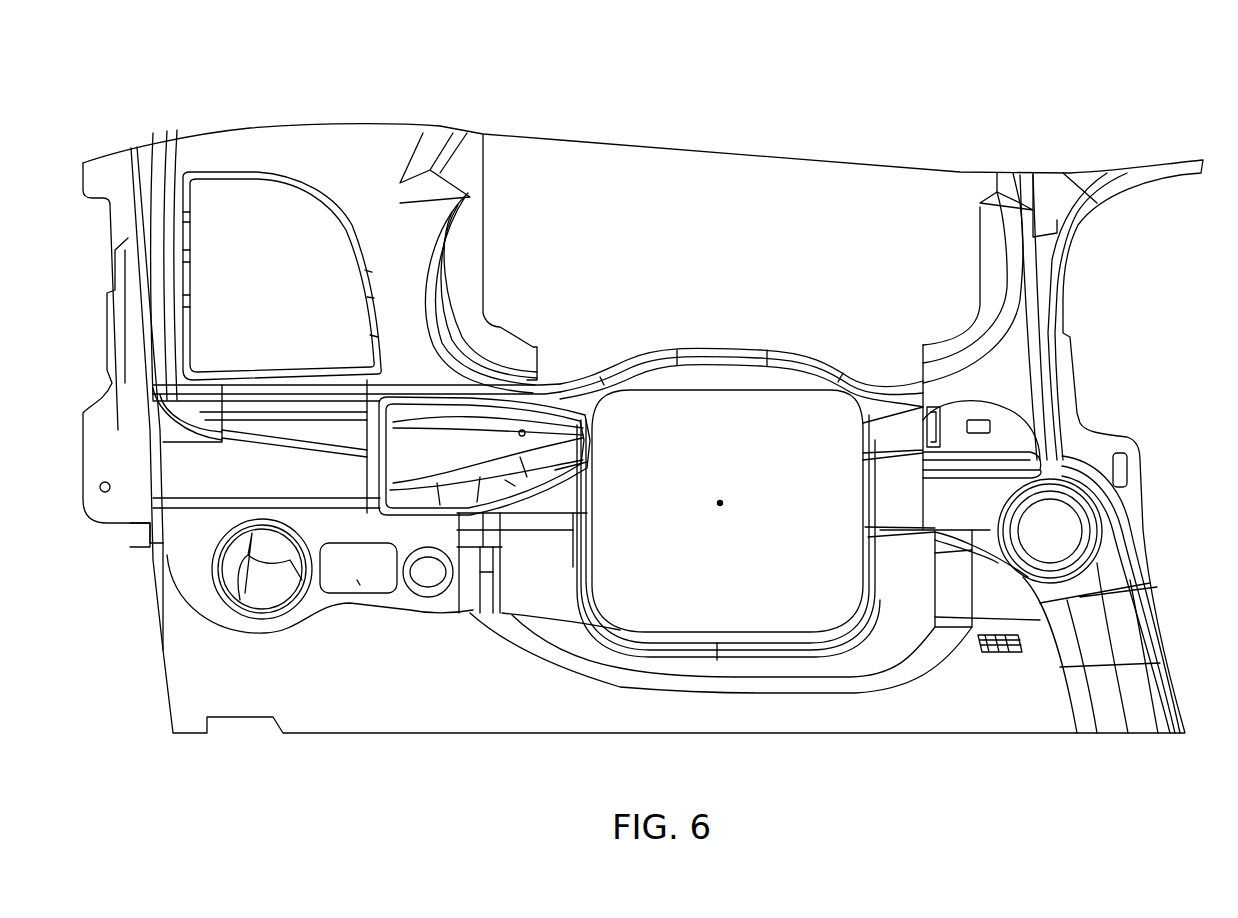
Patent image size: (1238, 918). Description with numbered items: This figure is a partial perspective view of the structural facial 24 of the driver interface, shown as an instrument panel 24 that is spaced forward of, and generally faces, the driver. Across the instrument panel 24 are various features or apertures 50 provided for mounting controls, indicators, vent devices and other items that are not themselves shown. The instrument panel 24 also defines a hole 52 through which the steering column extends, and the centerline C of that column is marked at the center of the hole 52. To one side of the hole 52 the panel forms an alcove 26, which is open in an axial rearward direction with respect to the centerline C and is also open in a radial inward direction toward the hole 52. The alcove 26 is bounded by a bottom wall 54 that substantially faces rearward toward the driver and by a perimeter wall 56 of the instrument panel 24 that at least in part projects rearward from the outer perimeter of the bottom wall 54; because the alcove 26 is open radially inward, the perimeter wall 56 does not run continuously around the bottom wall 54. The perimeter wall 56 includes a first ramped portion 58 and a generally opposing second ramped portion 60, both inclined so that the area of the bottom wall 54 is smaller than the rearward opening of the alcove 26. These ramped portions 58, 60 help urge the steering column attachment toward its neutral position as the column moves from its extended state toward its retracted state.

The facial 24 is at (822, 98).
The alcove 26 is at (458, 435).
The apertures 50 is at (283, 294).
The hole 52 is at (734, 474).
The bottom wall 54 is at (480, 457).
The perimeter wall 56 is at (569, 468).
The first ramped portion 58 is at (525, 428).
The second ramped portion 60 is at (512, 483).
The centerline C is at (723, 501).